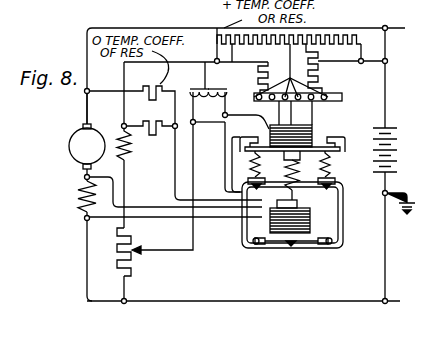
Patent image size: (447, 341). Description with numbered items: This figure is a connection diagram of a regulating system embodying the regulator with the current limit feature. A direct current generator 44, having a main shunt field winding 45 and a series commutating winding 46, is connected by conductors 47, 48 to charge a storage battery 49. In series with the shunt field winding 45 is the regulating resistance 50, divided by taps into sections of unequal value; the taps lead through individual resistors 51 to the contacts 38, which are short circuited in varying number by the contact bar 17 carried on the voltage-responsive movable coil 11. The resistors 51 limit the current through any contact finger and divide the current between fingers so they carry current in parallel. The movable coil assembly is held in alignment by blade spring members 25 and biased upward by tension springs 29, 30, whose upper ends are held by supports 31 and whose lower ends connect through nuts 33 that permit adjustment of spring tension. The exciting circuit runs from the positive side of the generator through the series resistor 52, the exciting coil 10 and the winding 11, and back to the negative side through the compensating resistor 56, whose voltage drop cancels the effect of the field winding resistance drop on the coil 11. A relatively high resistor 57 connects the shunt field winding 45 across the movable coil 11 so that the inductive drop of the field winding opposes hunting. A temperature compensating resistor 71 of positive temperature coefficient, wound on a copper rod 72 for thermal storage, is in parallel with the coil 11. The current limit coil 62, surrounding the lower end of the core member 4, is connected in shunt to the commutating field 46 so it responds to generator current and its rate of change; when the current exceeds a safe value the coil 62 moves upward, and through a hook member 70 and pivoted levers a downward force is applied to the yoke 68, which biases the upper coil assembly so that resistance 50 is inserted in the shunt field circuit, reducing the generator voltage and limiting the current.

The core member 4 is at (299, 163).
The exciting coil 10 is at (296, 204).
The movable coil 11 is at (312, 128).
The contact bar 17 is at (342, 97).
The blade spring member 25 is at (254, 97).
The tension spring 29 is at (250, 167).
The tension spring 30 is at (331, 167).
The support 31 is at (348, 146).
The nut 33 is at (268, 113).
The contact 38 is at (305, 113).
The direct current generator 44 is at (87, 130).
The main shunt field winding 45 is at (131, 147).
The series commutating winding 46 is at (78, 198).
The conductor 47 is at (155, 28).
The conductor 48 is at (153, 301).
The storage battery 49 is at (398, 150).
The regulating resistance 50 is at (342, 38).
The resistor 51 is at (258, 74).
The series resistor 52 is at (152, 86).
The compensating resistor 56 is at (117, 251).
The resistor 57 is at (153, 121).
The current limit coil 62 is at (310, 214).
The yoke 68 is at (343, 215).
The hook member 70 is at (287, 247).
The temperature compensating resistor 71 is at (217, 92).
The copper rod 72 is at (192, 95).